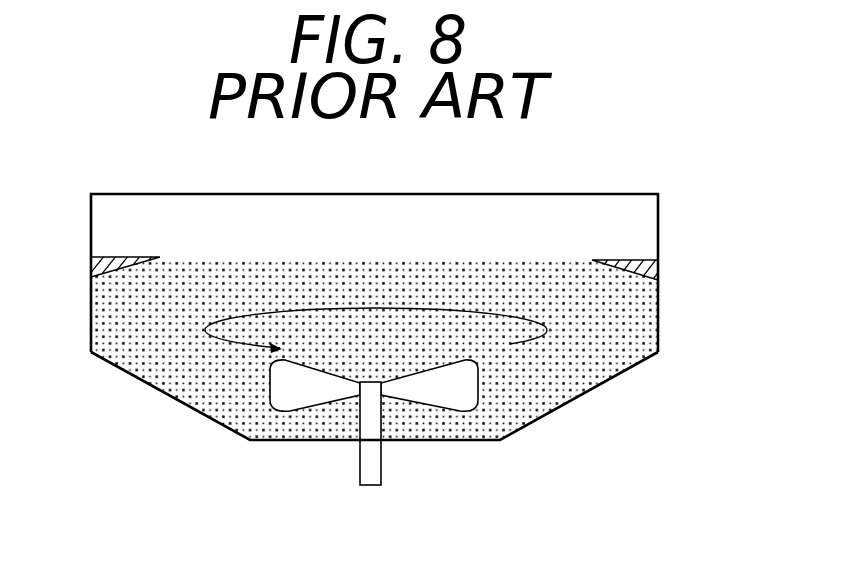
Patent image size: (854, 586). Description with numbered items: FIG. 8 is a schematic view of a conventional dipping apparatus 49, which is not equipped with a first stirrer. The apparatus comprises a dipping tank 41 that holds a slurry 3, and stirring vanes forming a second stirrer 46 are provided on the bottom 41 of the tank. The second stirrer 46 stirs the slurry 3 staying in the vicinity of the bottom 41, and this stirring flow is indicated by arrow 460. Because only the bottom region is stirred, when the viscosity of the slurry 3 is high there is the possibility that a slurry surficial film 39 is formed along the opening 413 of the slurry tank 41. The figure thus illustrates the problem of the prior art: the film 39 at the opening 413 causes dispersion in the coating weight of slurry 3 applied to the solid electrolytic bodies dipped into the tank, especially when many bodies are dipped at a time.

The opening 413 is at (658, 230).
The slurry surficial film 39 is at (658, 278).
The slurry 3 is at (637, 323).
The dipping tank 41 is at (133, 378).
The conventional dipping apparatus 49 is at (121, 445).
The arrow 460 is at (532, 347).
The second stirrer 46 is at (297, 397).